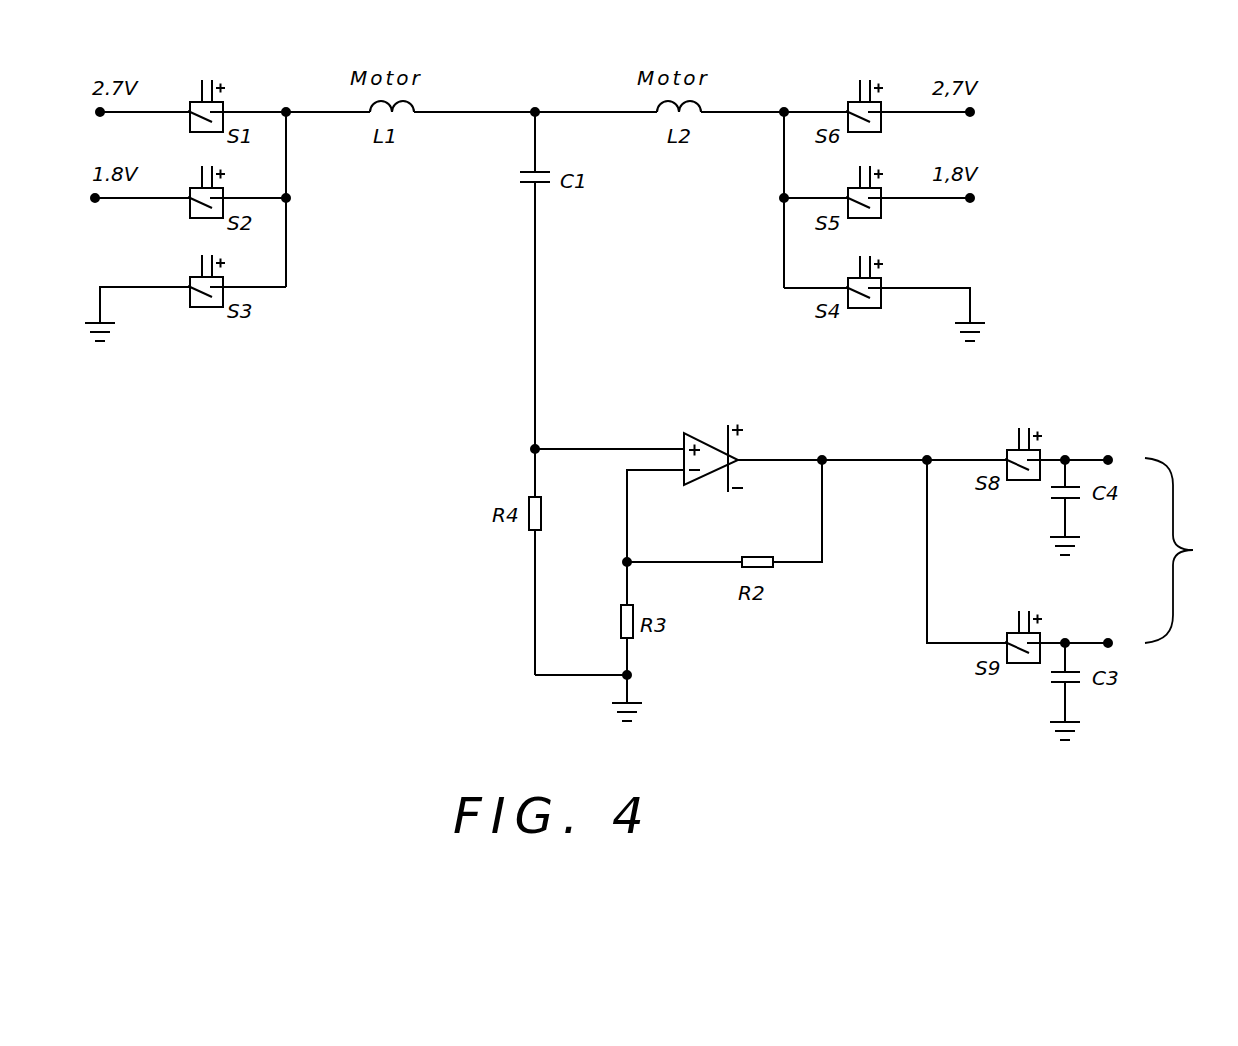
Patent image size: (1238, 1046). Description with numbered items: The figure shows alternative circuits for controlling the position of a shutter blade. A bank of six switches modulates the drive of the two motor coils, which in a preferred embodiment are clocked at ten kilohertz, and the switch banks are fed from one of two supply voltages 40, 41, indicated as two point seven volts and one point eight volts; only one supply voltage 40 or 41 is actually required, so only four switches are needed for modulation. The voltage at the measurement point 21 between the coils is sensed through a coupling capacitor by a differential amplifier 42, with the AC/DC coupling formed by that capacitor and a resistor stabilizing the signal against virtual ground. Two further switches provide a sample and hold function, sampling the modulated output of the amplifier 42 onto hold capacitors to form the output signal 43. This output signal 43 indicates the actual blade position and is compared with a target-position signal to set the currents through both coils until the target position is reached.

The measurement point 21 is at (536, 104).
The supply voltage 40 is at (534, 115).
The supply voltage 41 is at (534, 201).
The differential amplifier 42 is at (687, 433).
The output signal 43 is at (1129, 598).